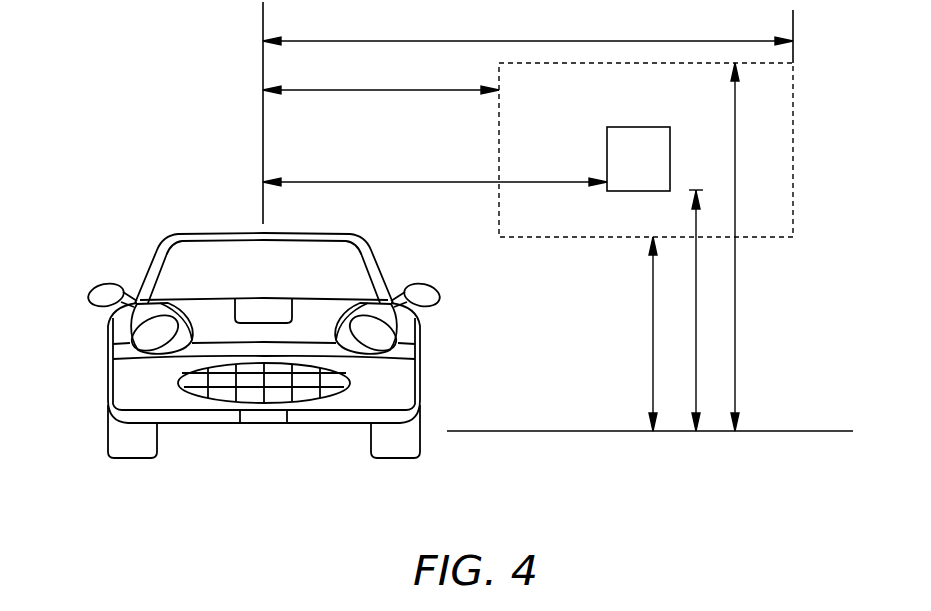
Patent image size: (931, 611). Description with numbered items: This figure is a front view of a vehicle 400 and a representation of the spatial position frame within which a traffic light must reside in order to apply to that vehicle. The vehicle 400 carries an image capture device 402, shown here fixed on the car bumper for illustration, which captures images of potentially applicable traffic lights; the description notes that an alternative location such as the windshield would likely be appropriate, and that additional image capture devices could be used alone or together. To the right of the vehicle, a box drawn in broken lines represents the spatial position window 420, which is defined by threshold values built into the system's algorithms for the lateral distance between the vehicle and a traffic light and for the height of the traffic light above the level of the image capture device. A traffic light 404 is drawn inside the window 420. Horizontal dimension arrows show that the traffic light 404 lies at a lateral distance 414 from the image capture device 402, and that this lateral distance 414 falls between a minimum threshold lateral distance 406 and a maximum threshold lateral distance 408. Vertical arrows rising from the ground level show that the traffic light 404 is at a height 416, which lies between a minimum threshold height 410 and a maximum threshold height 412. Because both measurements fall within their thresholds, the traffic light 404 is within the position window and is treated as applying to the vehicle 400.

The vehicle 400 is at (108, 357).
The image capture device 402 is at (267, 422).
The traffic light 404 is at (640, 127).
The minimum threshold lateral distance 406 is at (377, 90).
The maximum threshold lateral distance 408 is at (572, 41).
The minimum threshold height 410 is at (653, 350).
The maximum threshold height 412 is at (735, 366).
The lateral distance 414 is at (392, 182).
The height 416 is at (696, 383).
The spatial position window 420 is at (793, 173).